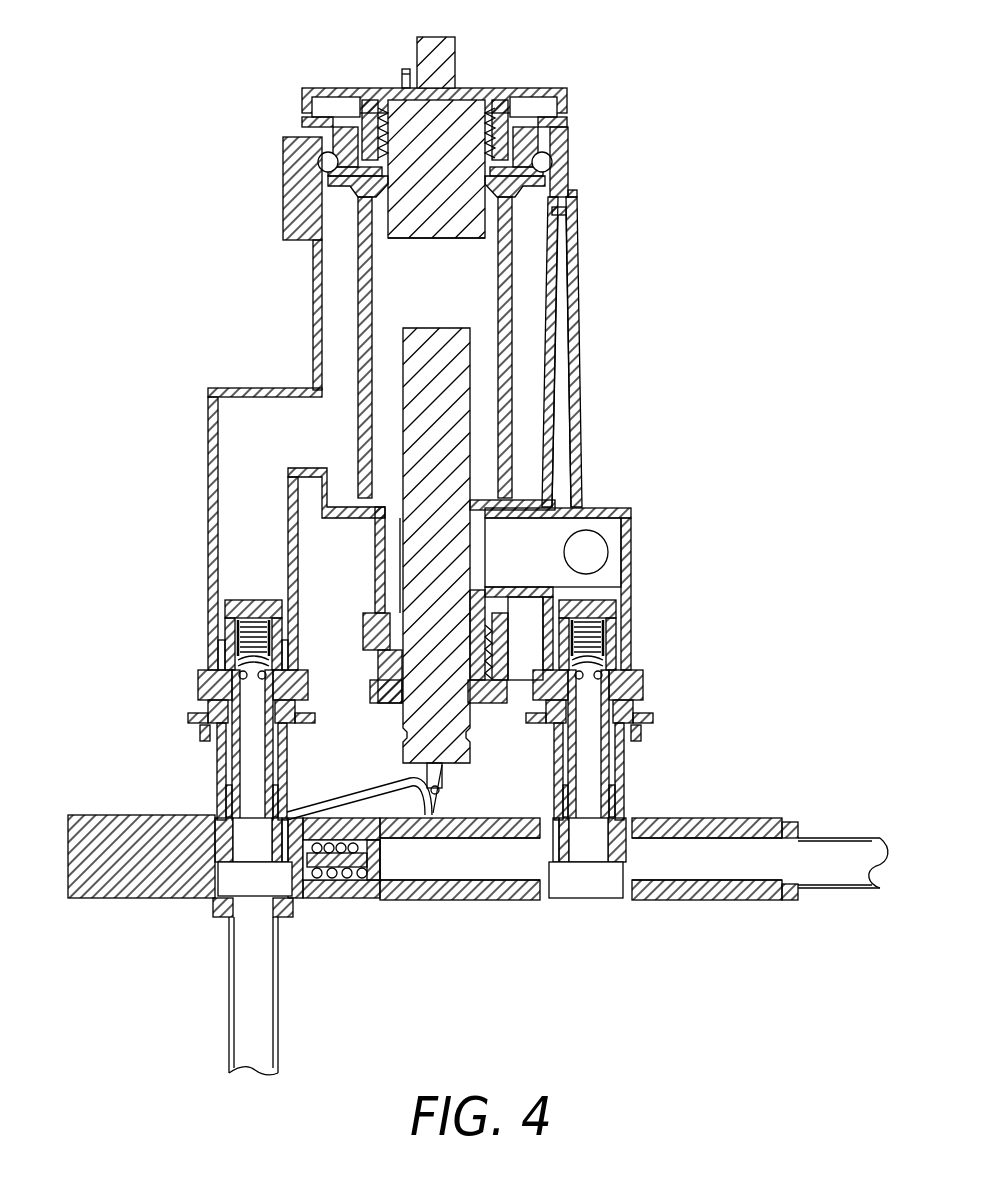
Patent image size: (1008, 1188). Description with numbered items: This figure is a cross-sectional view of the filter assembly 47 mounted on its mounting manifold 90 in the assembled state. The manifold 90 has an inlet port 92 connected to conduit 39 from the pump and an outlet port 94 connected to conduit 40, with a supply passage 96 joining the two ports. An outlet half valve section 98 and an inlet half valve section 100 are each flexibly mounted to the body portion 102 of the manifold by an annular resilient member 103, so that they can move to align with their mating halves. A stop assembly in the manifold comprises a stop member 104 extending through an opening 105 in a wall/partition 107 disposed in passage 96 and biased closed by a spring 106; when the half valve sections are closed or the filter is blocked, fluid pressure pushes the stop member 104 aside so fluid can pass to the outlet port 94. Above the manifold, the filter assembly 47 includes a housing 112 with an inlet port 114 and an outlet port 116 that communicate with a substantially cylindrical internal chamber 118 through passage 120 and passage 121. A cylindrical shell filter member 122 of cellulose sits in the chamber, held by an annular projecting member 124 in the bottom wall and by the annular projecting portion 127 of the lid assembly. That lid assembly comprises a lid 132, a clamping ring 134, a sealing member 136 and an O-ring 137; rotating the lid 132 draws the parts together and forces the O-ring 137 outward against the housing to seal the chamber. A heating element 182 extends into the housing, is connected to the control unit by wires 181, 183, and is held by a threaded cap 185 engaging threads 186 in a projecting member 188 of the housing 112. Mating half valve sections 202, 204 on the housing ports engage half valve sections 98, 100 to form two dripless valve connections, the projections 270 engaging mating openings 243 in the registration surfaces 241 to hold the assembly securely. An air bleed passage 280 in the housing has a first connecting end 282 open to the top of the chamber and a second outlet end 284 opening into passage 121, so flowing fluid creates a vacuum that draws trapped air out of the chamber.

The conduit 39 is at (280, 1040).
The conduit 40 is at (855, 838).
The filter assembly 47 is at (662, 350).
The mounting manifold 90 is at (92, 812).
The inlet port 92 is at (222, 917).
The outlet port 94 is at (790, 905).
The supply passage 96 is at (215, 878).
The outlet half valve section 98 is at (222, 800).
The inlet half valve section 100 is at (622, 803).
The body portion 102 is at (515, 862).
The annular resilient member 103 is at (245, 870).
The stop member 104 is at (350, 880).
The opening 105 is at (370, 866).
The spring 106 is at (318, 880).
The wall/partition 107 is at (440, 862).
The housing 112 is at (318, 333).
The inlet port 114 is at (212, 634).
The outlet port 116 is at (632, 643).
The internal chamber 118 is at (430, 262).
The passage 120 is at (245, 512).
The passage 121 is at (538, 553).
The cylindrical shell filter member 122 is at (514, 327).
The annular projecting member 124 is at (357, 507).
The annular projecting portion 127 is at (358, 190).
The lid 132 is at (492, 108).
The clamping ring 134 is at (305, 120).
The sealing member 136 is at (528, 180).
The O-ring 137 is at (555, 140).
The wire 181 is at (397, 772).
The heating element 182 is at (402, 366).
The wire 183 is at (445, 782).
The threaded cap 185 is at (479, 705).
The threads 186 is at (365, 648).
The projecting member 188 is at (368, 605).
The mating half valve section 202 is at (243, 600).
The mating half valve section 204 is at (616, 605).
The registration surface 241 is at (196, 718).
The mating opening 243 is at (208, 735).
The projection 270 is at (206, 702).
The air bleed passage 280 is at (568, 258).
The first connecting end 282 is at (559, 213).
The second outlet end 284 is at (566, 497).